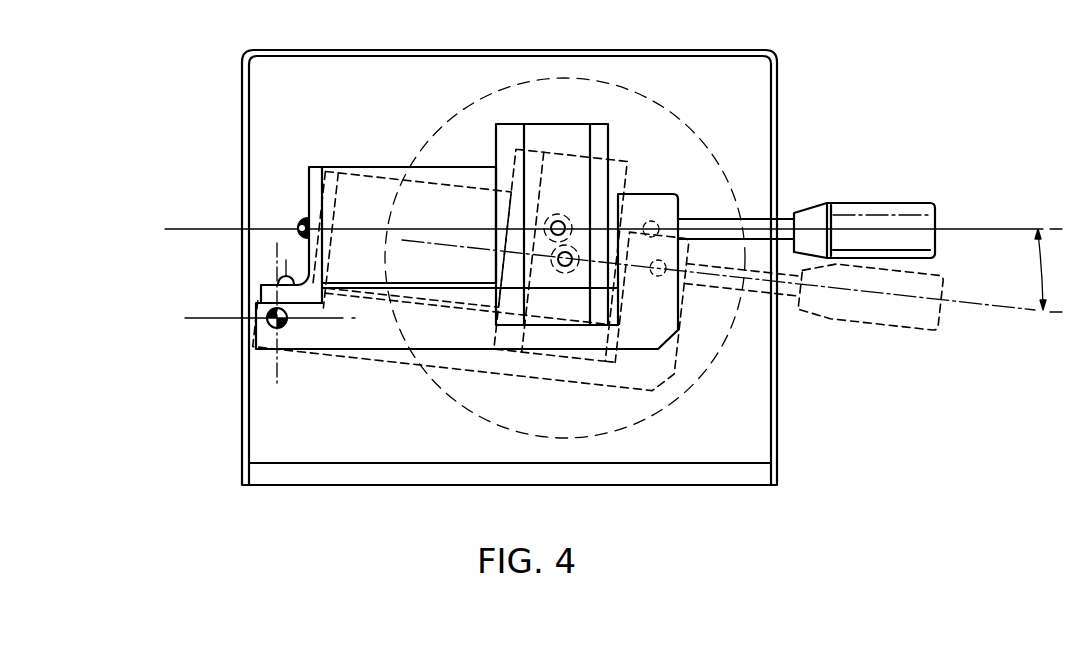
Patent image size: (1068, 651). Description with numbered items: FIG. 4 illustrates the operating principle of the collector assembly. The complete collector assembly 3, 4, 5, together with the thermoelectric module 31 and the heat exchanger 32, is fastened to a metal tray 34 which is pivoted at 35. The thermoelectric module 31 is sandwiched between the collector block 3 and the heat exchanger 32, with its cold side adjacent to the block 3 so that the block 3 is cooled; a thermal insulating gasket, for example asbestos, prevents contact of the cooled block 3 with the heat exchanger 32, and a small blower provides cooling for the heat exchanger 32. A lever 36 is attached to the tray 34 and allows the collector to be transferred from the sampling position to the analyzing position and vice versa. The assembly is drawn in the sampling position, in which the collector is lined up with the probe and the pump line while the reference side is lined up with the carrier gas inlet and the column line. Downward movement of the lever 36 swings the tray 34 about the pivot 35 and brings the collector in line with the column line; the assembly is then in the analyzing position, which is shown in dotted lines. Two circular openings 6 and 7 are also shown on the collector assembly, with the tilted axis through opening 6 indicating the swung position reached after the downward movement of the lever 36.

The collector block 3 is at (609, 364).
The collector assembly part 4 is at (609, 364).
The collector assembly part 5 is at (553, 305).
The bore 6 is at (571, 256).
The bore 7 is at (564, 223).
The thermoelectric module 31 is at (533, 170).
The heat exchanger 32 is at (391, 173).
The metal tray 34 is at (392, 332).
The pivot 35 is at (283, 327).
The lever 36 is at (833, 235).